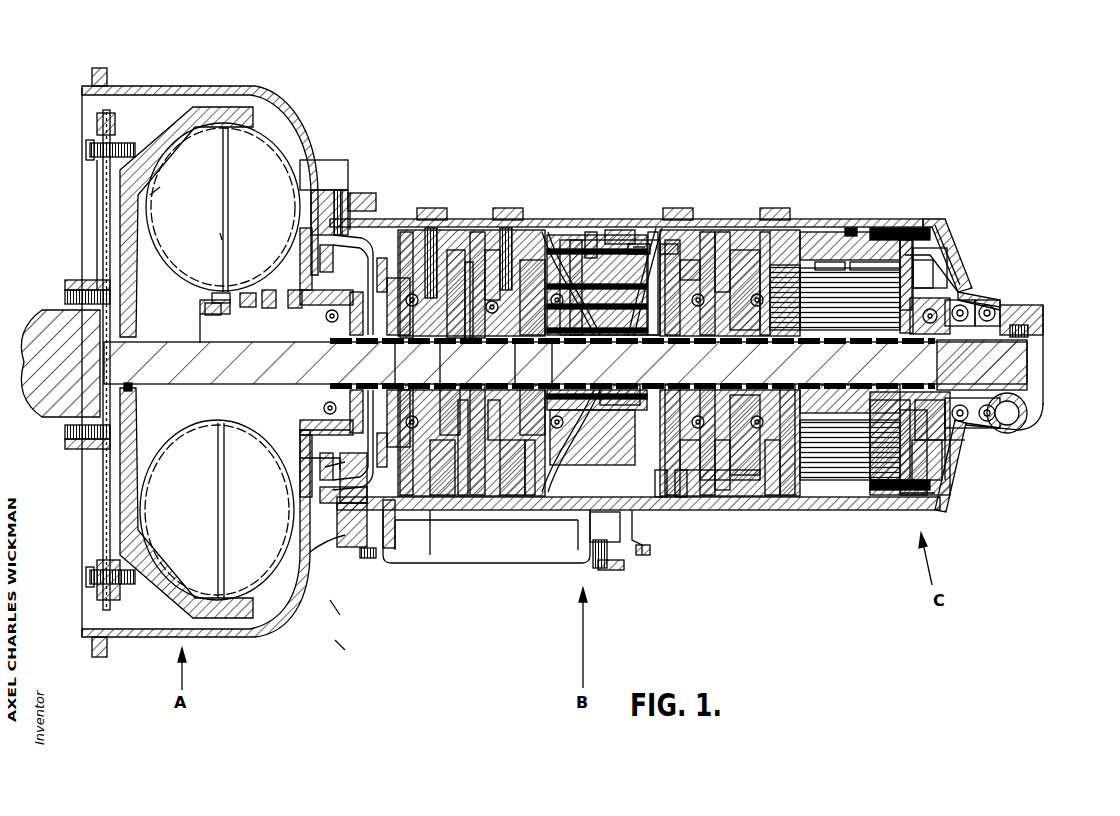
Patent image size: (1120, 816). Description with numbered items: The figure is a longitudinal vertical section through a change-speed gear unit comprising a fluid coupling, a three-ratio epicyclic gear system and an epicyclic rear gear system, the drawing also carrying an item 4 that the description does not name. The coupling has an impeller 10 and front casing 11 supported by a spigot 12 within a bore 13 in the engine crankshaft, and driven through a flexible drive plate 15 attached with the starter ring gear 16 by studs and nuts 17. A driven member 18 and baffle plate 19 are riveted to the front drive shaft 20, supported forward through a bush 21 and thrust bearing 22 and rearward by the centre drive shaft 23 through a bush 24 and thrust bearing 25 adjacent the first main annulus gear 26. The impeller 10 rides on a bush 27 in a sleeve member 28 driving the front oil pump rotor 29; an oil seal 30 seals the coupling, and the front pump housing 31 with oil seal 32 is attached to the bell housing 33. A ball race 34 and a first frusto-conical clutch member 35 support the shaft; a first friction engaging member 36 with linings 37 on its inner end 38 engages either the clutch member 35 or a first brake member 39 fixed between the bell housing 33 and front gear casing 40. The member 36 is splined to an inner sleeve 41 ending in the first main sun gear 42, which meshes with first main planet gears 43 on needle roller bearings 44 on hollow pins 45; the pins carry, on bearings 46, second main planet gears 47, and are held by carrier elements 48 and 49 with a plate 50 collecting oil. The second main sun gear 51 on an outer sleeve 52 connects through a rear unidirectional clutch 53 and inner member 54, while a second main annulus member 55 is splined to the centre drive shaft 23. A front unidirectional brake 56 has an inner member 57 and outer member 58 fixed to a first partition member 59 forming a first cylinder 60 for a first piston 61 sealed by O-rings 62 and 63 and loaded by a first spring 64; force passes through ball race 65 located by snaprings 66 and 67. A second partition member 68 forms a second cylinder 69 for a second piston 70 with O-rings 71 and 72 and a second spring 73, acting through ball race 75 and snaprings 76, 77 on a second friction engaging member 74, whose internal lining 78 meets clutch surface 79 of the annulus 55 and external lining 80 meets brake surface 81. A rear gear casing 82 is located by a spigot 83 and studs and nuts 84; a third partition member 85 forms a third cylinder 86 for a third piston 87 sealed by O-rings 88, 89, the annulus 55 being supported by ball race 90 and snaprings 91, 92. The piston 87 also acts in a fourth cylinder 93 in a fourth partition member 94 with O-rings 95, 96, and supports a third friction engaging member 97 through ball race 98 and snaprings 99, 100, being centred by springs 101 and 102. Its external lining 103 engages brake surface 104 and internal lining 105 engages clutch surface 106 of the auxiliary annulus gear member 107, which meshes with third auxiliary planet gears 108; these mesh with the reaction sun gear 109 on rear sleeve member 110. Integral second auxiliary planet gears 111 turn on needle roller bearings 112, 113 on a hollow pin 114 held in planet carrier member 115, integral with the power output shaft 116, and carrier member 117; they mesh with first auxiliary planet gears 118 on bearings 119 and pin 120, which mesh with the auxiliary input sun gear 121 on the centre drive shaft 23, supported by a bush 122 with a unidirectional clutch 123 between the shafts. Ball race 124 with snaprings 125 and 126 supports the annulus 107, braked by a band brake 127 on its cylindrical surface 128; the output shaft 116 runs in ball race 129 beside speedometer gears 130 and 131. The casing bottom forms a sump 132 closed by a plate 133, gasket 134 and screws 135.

The input hub 4 is at (57, 394).
The impeller 10 is at (293, 174).
The front casing 11 is at (123, 224).
The spigot 12 is at (110, 343).
The bore 13 is at (67, 300).
The flexible drive plate 15 is at (103, 247).
The engine starter ring gear 16 is at (97, 123).
The studs and nuts 17 is at (90, 150).
The driven member 18 is at (160, 188).
The baffle plate 19 is at (220, 234).
The front drive shaft 20 is at (230, 362).
The bush 21 is at (57, 418).
The thrust bearing 22 is at (130, 388).
The centre drive shaft 23 is at (822, 506).
The bush 24 is at (680, 511).
The thrust bearing 25 is at (660, 511).
The first main annulus gear 26 is at (608, 570).
The bush 27 is at (215, 333).
The sleeve member 28 is at (222, 293).
The front oil pump rotor 29 is at (267, 290).
The oil seal 30 is at (213, 300).
The front pump housing 31 is at (293, 290).
The oil seal 32 is at (257, 290).
The bell housing 33 is at (280, 104).
The combined journal and thrust ball race 34 is at (323, 190).
The first frusto-conical clutch member 35 is at (338, 190).
The first axially-movable friction engaging member 36 is at (383, 222).
The friction linings 37 is at (367, 193).
The inner end 38 is at (365, 193).
The first frusto-conical brake member 39 is at (350, 193).
The front change-speed gear casing 40 is at (407, 225).
The inner sleeve 41 is at (517, 347).
The first main sun gear 42 is at (590, 506).
The first main planet gears 43 is at (617, 222).
The needle roller bearings 44 is at (634, 222).
The hollow pin 45 is at (633, 247).
The needle roller bearings 46 is at (590, 225).
The second main planet gears 47 is at (577, 225).
The second main planet carrier element 48 is at (508, 506).
The first main planet carrier element 49 is at (602, 568).
The plate 50 is at (680, 225).
The second main sun gear 51 is at (598, 348).
The outer sleeve 52 is at (533, 225).
The rear unidirectional clutch 53 is at (543, 225).
The inner member 54 is at (554, 347).
The second main annulus member 55 is at (677, 225).
The front unidirectional brake 56 is at (447, 225).
The inner member 57 is at (480, 347).
The outer member 58 is at (438, 210).
The first partition member 59 is at (410, 554).
The first fluid pressure operable cylinder 60 is at (377, 554).
The first co-acting piston 61 is at (300, 508).
The O-ring 62 is at (337, 513).
The O-ring 63 is at (325, 467).
The first frusto-conical spring 64 is at (337, 487).
The combined thrust and journal ball race 65 is at (322, 458).
The snapring 66 is at (388, 347).
The snapring 67 is at (438, 347).
The second partition member 68 is at (492, 206).
The second fluid pressure operable cylinder 69 is at (500, 206).
The second piston 70 is at (473, 225).
The O-ring 71 is at (480, 225).
The O-ring 72 is at (513, 215).
The second frusto-conical spring 73 is at (445, 506).
The second axially-movable friction engaging member 74 is at (500, 506).
The combined thrust and journal ball race 75 is at (460, 506).
The snapring 76 is at (430, 554).
The snapring 77 is at (480, 506).
The frusto-conical internal friction lining 78 is at (560, 506).
The frusto-conical clutch surface portion 79 is at (580, 506).
The frusto-conical external friction lining 80 is at (548, 506).
The frusto-conical brake surface portion 81 is at (520, 506).
The rear change-speed gear casing 82 is at (690, 514).
The spigot 83 is at (634, 226).
The studs and nuts 84 is at (642, 560).
The third partition member 85 is at (688, 511).
The third fluid pressure operable cylinder 86 is at (708, 516).
The third piston 87 is at (698, 511).
The O-ring 88 is at (705, 513).
The O-ring 89 is at (650, 470).
The combined thrust and journal ball race 90 is at (715, 348).
The snapring 91 is at (758, 348).
The snapring 92 is at (697, 225).
The fourth fluid pressure operable cylinder 93 is at (778, 511).
The fourth partition member 94 is at (760, 514).
The O-ring 95 is at (800, 514).
The O-ring 96 is at (853, 514).
The third axially-movable friction engaging member 97 is at (838, 514).
The combined thrust and journal ball race 98 is at (783, 225).
The snapring 99 is at (822, 346).
The snapring 100 is at (770, 225).
The helically coiled compression spring 101 is at (720, 225).
The helically coiled compression spring 102 is at (747, 225).
The external frusto-conical friction lining 103 is at (813, 225).
The frusto-conical brake surface 104 is at (797, 225).
The internal frusto-conical friction lining 105 is at (847, 225).
The frusto-conical clutch surface 106 is at (865, 225).
The auxiliary annulus gear member 107 is at (880, 222).
The third auxiliary planet gears 108 is at (853, 225).
The auxiliary reaction sun gear 109 is at (898, 514).
The rear sleeve member 110 is at (913, 514).
The second auxiliary planet gears 111 is at (947, 222).
The needle roller bearings 112 is at (884, 222).
The needle roller bearings 113 is at (907, 222).
The hollow pin 114 is at (1000, 276).
The planet carrier member 115 is at (910, 263).
The power output shaft 116 is at (1023, 354).
The planet carrier member 117 is at (820, 225).
The first auxiliary planet gear 118 is at (918, 502).
The needle roller bearings 119 is at (938, 508).
The hollow pin 120 is at (953, 461).
The auxiliary input sun gear 121 is at (962, 431).
The bush 122 is at (970, 424).
The unidirectional clutch 123 is at (962, 441).
The combined thrust and journal ball race 124 is at (977, 320).
The snapring 125 is at (947, 308).
The snapring 126 is at (1023, 331).
The band brake 127 is at (947, 219).
The cylindrical surface 128 is at (913, 258).
The ball race 129 is at (1027, 313).
The first speedometer driving gear 130 is at (1013, 401).
The second speedometer driving gear 131 is at (1030, 414).
The sump 132 is at (403, 558).
The plate 133 is at (283, 640).
The gasket 134 is at (333, 614).
The screws 135 is at (337, 648).